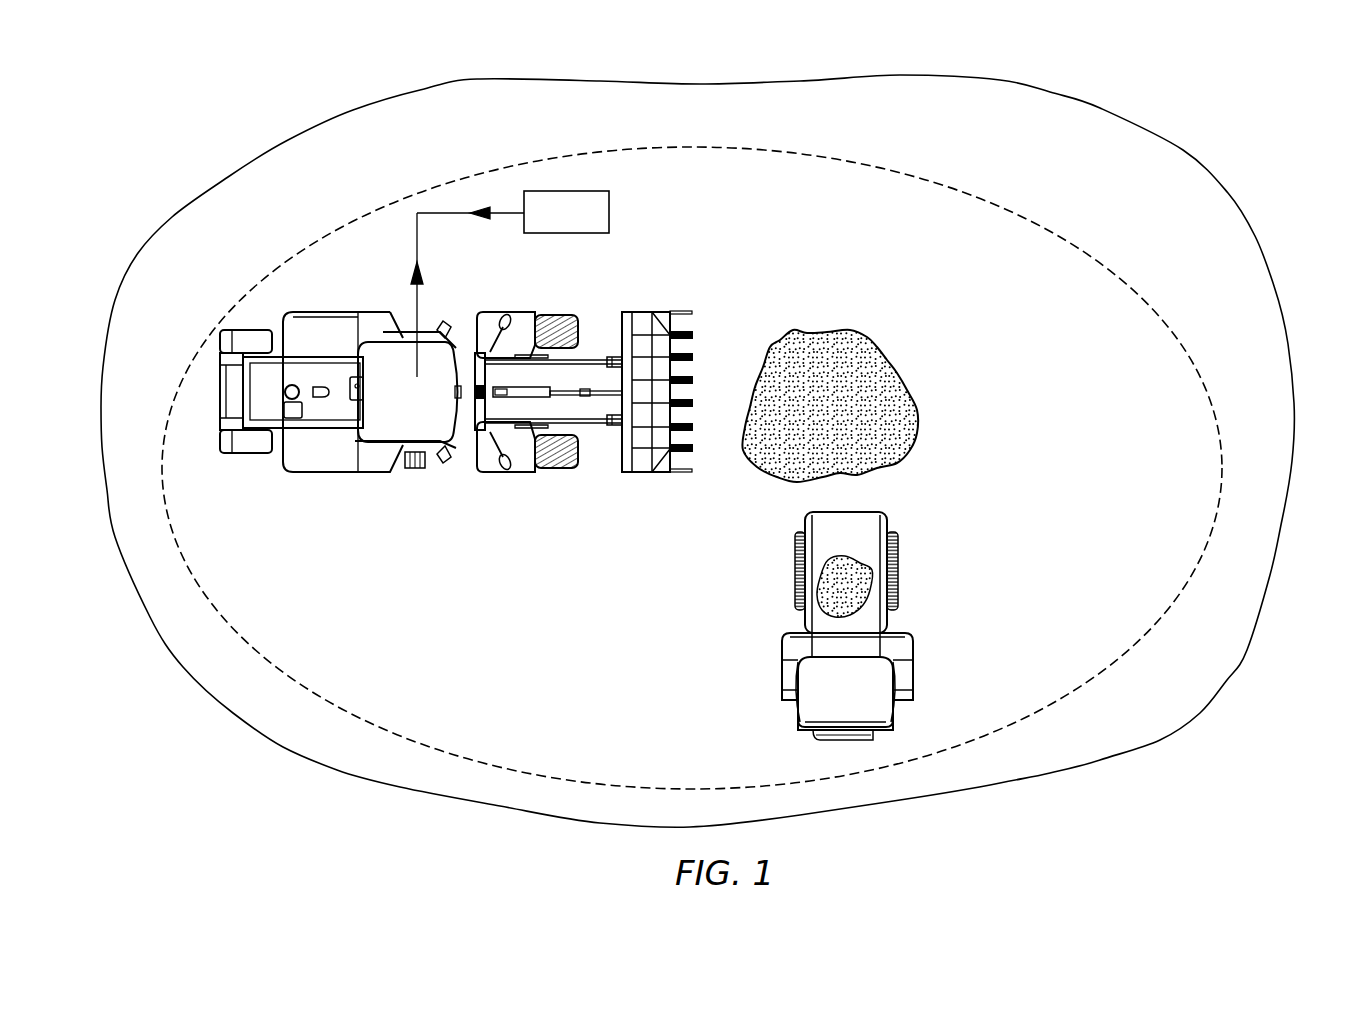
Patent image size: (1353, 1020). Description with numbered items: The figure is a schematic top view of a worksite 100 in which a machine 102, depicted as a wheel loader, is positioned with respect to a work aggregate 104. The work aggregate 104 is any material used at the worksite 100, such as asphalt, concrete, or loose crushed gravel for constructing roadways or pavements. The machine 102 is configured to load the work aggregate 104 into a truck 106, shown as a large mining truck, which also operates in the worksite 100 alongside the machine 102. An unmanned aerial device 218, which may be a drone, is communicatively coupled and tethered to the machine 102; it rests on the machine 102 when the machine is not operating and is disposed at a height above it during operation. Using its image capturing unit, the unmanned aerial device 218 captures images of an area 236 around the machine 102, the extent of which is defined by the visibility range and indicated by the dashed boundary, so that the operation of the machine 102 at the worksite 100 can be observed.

The worksite 100 is at (1200, 216).
The machine 102 is at (552, 495).
The work aggregate 104 is at (829, 340).
The truck 106 is at (929, 547).
The unmanned aerial device 218 is at (577, 225).
The area 236 is at (288, 262).